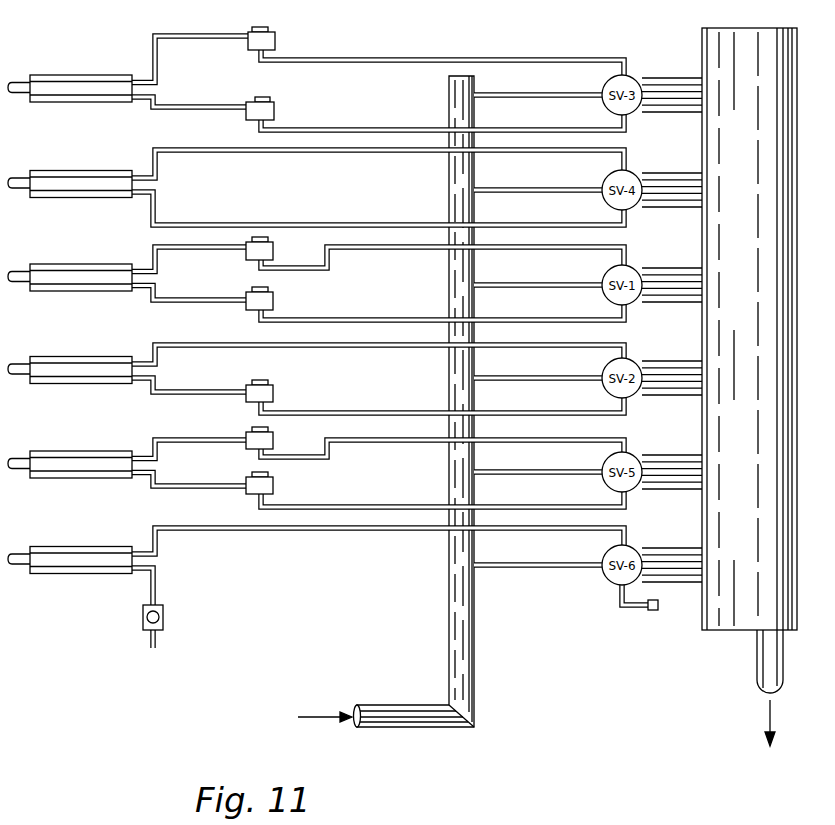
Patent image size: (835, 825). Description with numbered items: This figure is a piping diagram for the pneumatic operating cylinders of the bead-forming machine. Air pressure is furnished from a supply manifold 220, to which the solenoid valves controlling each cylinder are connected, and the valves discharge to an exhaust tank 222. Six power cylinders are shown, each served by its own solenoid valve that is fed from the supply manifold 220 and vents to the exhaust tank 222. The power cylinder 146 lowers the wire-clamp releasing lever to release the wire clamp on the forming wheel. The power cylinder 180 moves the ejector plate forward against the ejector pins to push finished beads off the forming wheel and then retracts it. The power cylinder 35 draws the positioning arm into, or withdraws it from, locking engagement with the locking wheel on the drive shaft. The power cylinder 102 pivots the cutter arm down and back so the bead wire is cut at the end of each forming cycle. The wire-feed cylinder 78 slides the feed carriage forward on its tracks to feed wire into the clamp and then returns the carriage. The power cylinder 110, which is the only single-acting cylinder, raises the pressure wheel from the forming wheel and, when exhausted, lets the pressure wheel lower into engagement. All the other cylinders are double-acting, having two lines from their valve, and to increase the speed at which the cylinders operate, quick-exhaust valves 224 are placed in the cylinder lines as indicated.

The power cylinder 146 is at (98, 83).
The power cylinder 180 is at (98, 180).
The power cylinder 35 is at (106, 274).
The power cylinder 102 is at (98, 368).
The wire-feed cylinder 78 is at (104, 470).
The power cylinder 110 is at (100, 560).
The quick-exhaust valve 224 is at (268, 40).
The supply manifold 220 is at (458, 592).
The exhaust tank 222 is at (749, 387).